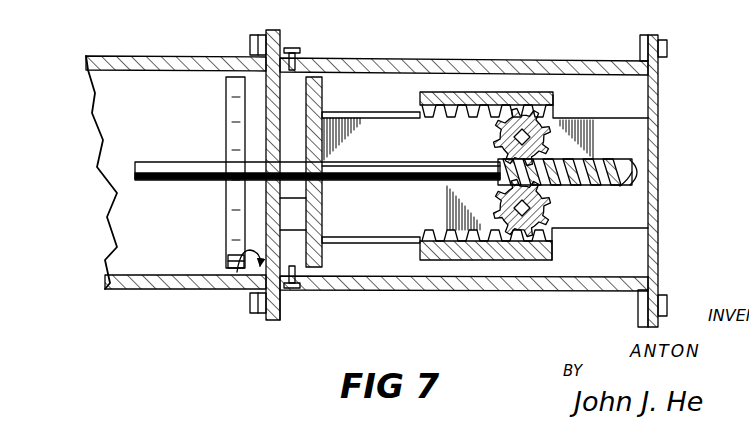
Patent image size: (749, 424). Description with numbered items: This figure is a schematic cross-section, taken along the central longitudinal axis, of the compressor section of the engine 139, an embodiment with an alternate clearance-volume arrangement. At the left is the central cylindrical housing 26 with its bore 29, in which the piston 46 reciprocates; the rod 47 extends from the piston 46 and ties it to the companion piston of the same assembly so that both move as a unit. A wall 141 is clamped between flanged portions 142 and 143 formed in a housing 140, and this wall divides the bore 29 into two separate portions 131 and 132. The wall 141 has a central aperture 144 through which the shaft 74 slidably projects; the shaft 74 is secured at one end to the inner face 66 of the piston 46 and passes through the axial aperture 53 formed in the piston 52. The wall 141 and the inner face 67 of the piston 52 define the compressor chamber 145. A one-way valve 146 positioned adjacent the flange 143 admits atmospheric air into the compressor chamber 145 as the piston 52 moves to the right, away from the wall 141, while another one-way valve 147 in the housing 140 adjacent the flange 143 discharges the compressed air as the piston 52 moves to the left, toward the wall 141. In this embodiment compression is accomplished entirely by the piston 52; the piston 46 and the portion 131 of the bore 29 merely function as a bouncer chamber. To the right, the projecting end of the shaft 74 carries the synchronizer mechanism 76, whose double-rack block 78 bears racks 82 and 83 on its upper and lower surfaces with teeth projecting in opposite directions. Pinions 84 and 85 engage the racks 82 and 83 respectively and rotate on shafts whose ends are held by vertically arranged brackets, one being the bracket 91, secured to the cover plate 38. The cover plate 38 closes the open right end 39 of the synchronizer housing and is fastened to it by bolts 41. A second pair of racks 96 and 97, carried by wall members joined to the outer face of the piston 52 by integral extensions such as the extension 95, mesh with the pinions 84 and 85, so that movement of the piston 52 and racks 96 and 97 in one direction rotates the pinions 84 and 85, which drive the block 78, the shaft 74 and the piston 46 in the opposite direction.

The engine 139 is at (80, 100).
The bore 29 is at (167, 71).
The central cylindrical housing 26 is at (128, 292).
The housing 140 is at (503, 58).
The flanged portion 142 is at (265, 320).
The flanged portion 143 is at (285, 305).
The one-way valve 147 is at (296, 52).
The one-way valve 146 is at (296, 284).
The bore portion 132 is at (286, 84).
The wall 141 is at (282, 198).
The inner face of piston 67 is at (305, 232).
The piston 52 is at (346, 118).
The axial aperture 53 is at (323, 168).
The compressor chamber 145 is at (310, 244).
The rod 47 is at (170, 164).
The shaft 74 is at (432, 181).
The piston 46 is at (226, 224).
The central aperture 144 is at (232, 182).
The inner face of piston 66 is at (238, 254).
The bore portion 131 is at (234, 276).
The rack 96 is at (450, 92).
The rack 97 is at (463, 254).
The integral extension 95 is at (405, 242).
The pinion 84 is at (496, 139).
The pinion 85 is at (550, 209).
The rack 82 is at (622, 168).
The double-rack block 78 is at (622, 166).
The rack 83 is at (604, 188).
The synchronizer mechanism 76 is at (592, 116).
The bracket 91 is at (602, 229).
The cover plate 38 is at (660, 172).
The open right end 39 is at (646, 44).
The bolts 41 is at (668, 47).